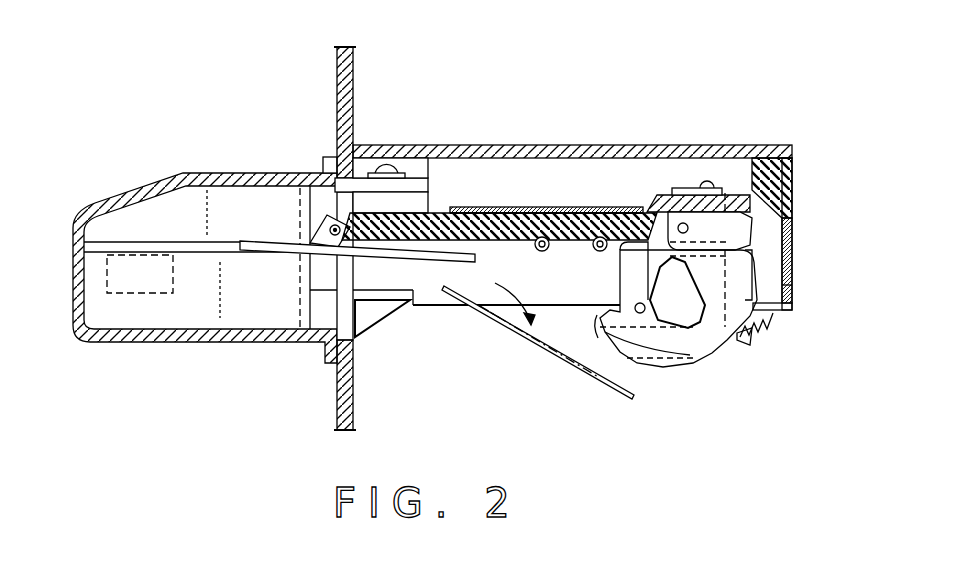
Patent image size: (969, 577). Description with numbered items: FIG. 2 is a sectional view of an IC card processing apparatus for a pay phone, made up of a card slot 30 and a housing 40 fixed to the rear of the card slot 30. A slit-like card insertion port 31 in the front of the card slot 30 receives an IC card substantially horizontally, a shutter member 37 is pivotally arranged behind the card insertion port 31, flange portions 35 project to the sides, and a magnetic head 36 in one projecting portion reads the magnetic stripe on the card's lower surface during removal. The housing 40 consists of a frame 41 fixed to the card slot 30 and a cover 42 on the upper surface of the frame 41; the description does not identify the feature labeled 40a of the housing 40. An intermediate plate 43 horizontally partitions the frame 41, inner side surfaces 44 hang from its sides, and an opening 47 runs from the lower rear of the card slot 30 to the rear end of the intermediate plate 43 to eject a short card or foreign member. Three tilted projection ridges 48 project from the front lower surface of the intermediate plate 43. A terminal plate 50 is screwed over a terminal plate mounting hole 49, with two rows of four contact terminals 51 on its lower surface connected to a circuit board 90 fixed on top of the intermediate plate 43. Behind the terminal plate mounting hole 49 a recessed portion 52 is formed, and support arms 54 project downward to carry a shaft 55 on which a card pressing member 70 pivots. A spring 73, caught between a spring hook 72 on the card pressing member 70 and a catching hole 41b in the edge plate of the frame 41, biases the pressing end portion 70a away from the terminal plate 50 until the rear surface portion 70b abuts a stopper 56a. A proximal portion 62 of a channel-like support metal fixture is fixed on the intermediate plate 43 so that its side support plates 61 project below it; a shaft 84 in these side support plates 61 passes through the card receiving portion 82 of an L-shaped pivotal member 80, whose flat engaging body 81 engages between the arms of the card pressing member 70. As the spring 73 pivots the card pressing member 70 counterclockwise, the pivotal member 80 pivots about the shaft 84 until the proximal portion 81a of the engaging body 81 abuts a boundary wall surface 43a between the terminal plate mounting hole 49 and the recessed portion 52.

The card slot 30 is at (178, 170).
The card insertion port 31 is at (300, 252).
The flange portion 35 is at (370, 312).
The magnetic head 36 is at (143, 292).
The shutter member 37 is at (300, 218).
The housing 40 is at (630, 207).
The recess 40a is at (796, 237).
The frame 41 is at (793, 166).
The catching hole 41b is at (796, 311).
The cover 42 is at (573, 146).
The intermediate plate 43 is at (497, 296).
The boundary wall surface 43a is at (677, 292).
The inner side surface 44 is at (570, 305).
The opening 47 is at (505, 327).
The tilted projection ridge 48 is at (412, 212).
The terminal plate mounting hole 49 is at (537, 205).
The terminal plate 50 is at (612, 214).
The contact terminal 51 is at (541, 251).
The recessed portion 52 is at (658, 198).
The support arm 54 is at (692, 198).
The shaft 55 is at (786, 193).
The stopper 56a is at (796, 257).
The side support plate 61 is at (726, 363).
The proximal portion of the support metal fixture 62 is at (688, 196).
The card pressing member 70 is at (632, 399).
The pressing end portion 70a is at (620, 375).
The rear surface portion 70b is at (792, 290).
The spring hook 72 is at (742, 343).
The spring 73 is at (768, 318).
The pivotal member 80 is at (646, 308).
The engaging body 81 is at (796, 221).
The proximal portion of the engaging body 81a is at (613, 258).
The card receiving portion 82 is at (597, 316).
The shaft 84 is at (650, 353).
The circuit board 90 is at (567, 208).